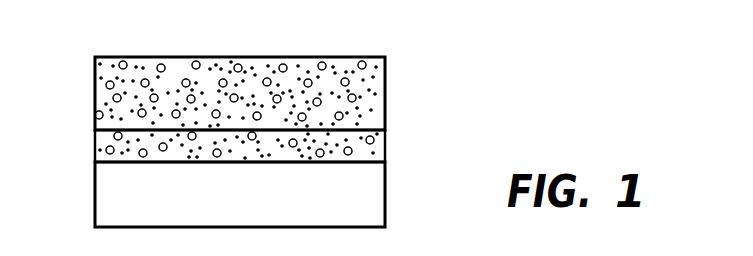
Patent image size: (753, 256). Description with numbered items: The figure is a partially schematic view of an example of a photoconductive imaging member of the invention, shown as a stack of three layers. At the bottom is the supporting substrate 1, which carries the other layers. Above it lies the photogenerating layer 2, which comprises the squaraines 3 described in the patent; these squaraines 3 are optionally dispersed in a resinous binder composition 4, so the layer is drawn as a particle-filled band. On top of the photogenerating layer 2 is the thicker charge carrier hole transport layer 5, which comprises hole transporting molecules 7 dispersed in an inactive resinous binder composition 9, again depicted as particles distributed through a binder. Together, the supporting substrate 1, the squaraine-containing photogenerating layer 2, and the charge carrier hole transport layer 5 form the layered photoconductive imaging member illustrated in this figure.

The supporting substrate 1 is at (386, 207).
The photogenerating layer 2 is at (386, 150).
The squaraines 3 is at (120, 154).
The resinous binder composition 4 is at (117, 138).
The charge carrier hole transport layer 5 is at (386, 80).
The hole transporting molecules 7 is at (113, 68).
The inactive resinous binder composition 9 is at (281, 63).